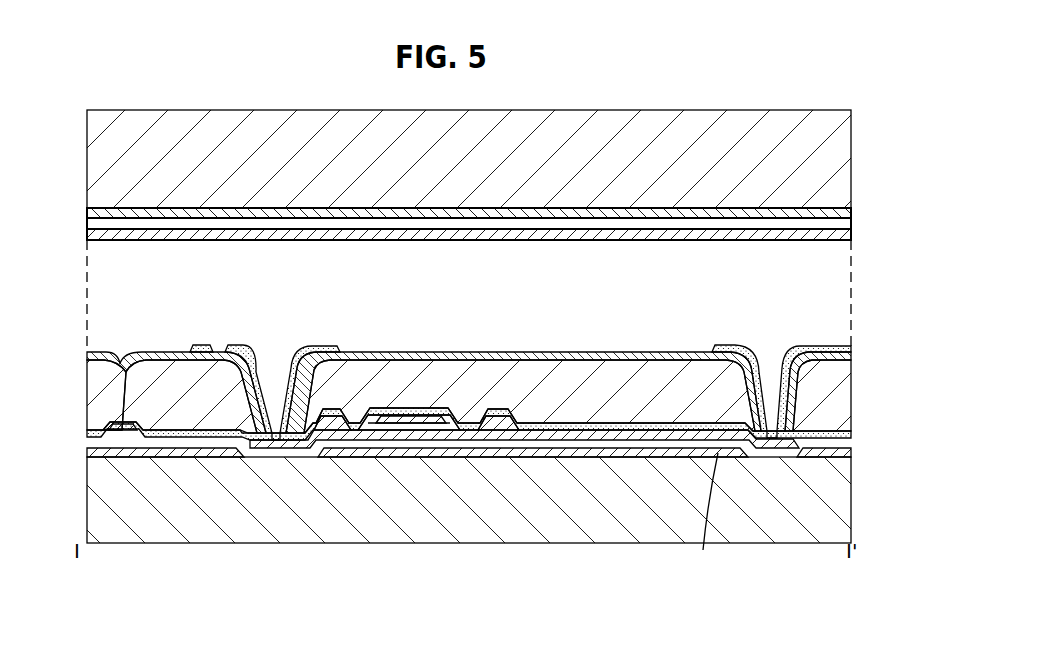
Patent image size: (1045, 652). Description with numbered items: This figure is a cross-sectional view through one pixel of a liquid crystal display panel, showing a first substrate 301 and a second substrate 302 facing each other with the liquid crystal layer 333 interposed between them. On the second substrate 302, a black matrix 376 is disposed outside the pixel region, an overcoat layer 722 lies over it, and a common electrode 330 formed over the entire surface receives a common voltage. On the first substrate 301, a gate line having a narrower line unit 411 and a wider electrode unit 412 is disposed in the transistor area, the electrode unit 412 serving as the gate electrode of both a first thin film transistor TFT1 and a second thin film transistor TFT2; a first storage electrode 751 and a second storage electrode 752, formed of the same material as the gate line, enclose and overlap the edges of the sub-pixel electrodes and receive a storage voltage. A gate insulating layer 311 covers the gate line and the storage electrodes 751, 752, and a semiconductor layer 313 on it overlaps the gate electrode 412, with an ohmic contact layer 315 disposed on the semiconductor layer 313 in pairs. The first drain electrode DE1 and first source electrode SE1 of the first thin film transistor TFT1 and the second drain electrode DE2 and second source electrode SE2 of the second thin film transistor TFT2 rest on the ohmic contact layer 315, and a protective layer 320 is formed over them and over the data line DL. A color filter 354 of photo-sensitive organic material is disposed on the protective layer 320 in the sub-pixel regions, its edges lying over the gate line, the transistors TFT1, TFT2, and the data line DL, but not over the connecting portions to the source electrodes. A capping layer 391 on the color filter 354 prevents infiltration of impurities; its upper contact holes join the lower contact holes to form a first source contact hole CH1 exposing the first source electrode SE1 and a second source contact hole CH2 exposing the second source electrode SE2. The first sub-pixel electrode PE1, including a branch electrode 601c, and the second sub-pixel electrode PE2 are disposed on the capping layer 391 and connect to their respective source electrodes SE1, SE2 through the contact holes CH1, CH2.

The second substrate 302 is at (836, 158).
The black matrix 376 is at (850, 213).
The overcoat layer 722 is at (850, 224).
The common electrode 330 is at (850, 236).
The liquid crystal layer 333 is at (838, 292).
The first substrate 301 is at (830, 492).
The first storage electrode 751 is at (170, 456).
The second storage electrode 752 is at (842, 454).
The line unit 411 is at (702, 515).
The gate insulating layer 311 is at (850, 444).
The protective layer 320 is at (850, 432).
The data line DL is at (116, 430).
The first source electrode SE1 is at (335, 418).
The first drain electrode DE1 is at (409, 428).
The second source electrode SE2 is at (503, 418).
The second drain electrode DE2 is at (446, 428).
The semiconductor layer 313 is at (383, 421).
The ohmic contact layer 315 is at (365, 428).
The electrode unit 412 is at (349, 429).
The first thin film transistor TFT1 is at (405, 517).
The second thin film transistor TFT2 is at (539, 519).
The color filter 354 is at (468, 372).
The capping layer 391 is at (590, 352).
The first sub-pixel electrode PE1 is at (236, 300).
The branch electrode 601c is at (232, 360).
The first source contact hole CH1 is at (283, 372).
The second sub-pixel electrode PE2 is at (722, 345).
The second source contact hole CH2 is at (770, 370).